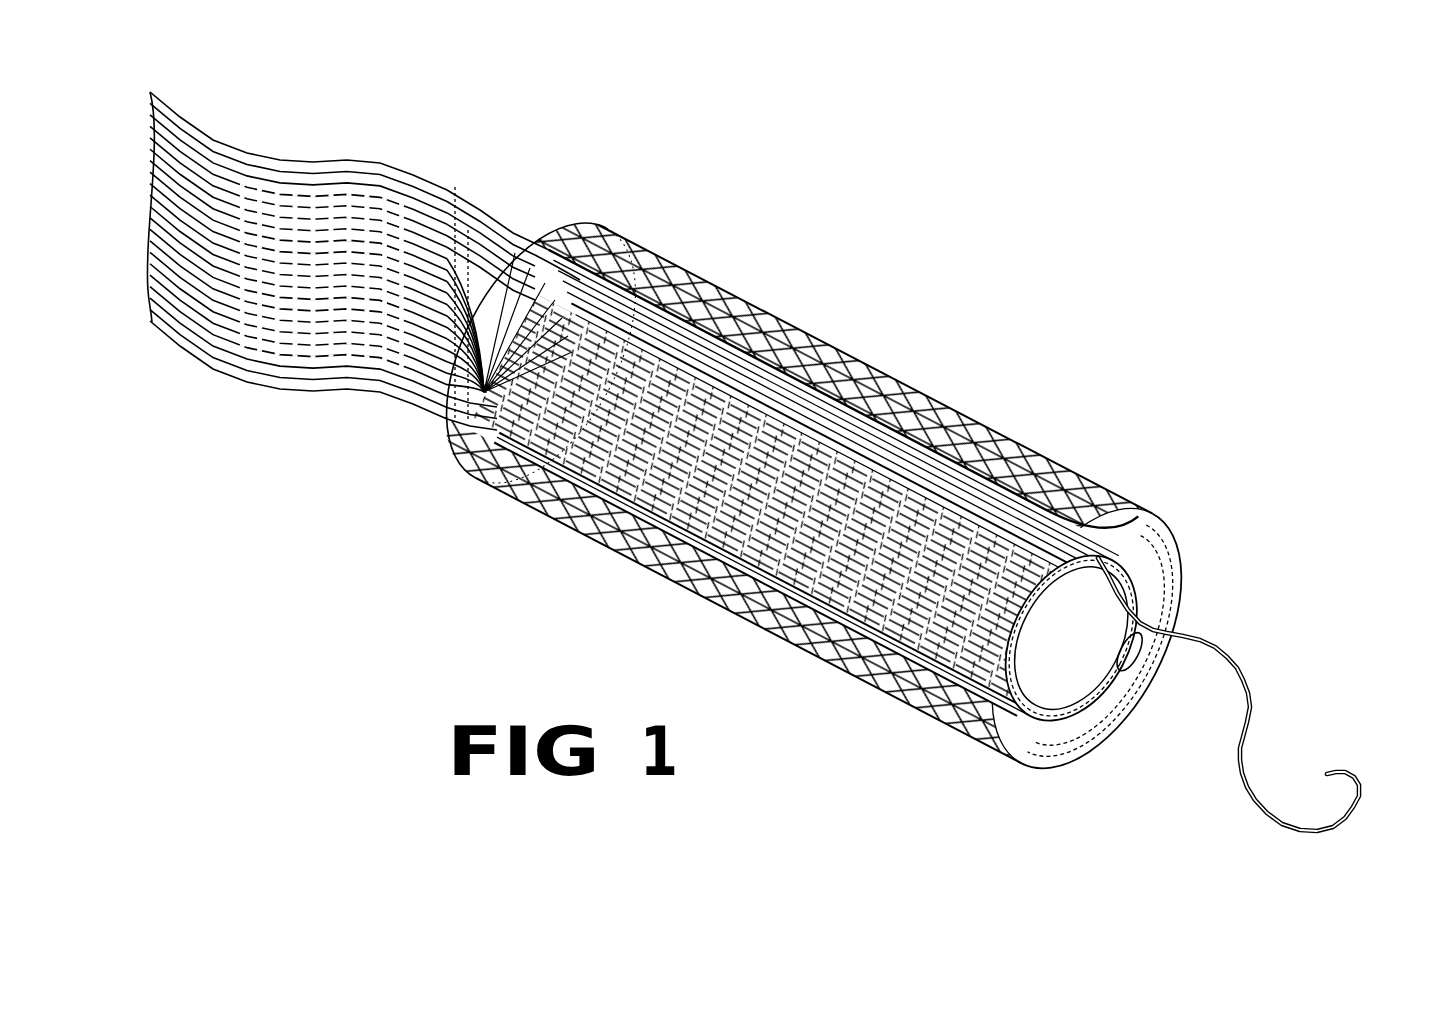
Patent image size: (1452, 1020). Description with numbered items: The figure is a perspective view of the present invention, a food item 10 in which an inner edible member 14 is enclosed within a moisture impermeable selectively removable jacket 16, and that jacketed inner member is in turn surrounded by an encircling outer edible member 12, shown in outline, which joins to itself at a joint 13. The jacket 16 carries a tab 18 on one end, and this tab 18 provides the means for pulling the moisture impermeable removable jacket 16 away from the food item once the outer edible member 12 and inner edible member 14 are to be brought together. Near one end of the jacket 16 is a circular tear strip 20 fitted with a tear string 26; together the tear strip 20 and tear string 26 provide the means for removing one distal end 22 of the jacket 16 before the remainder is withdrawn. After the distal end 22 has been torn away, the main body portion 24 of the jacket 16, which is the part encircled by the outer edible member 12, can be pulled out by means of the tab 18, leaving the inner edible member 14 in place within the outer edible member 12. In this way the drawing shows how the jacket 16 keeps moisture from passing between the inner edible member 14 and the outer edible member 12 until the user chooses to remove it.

The food item 10 is at (1317, 526).
The outer edible member 12 is at (903, 376).
The joint where outer edible member joins to itself 13 is at (1017, 527).
The inner edible member 14 is at (1085, 673).
The moisture impermeable selectively removable jacket 16 is at (497, 225).
The tab 18 is at (270, 157).
The circular tear strip 20 is at (1120, 677).
The distal end of the jacket 22 is at (1050, 684).
The main body portion of the jacket 24 is at (668, 482).
The tear string 26 is at (1222, 650).